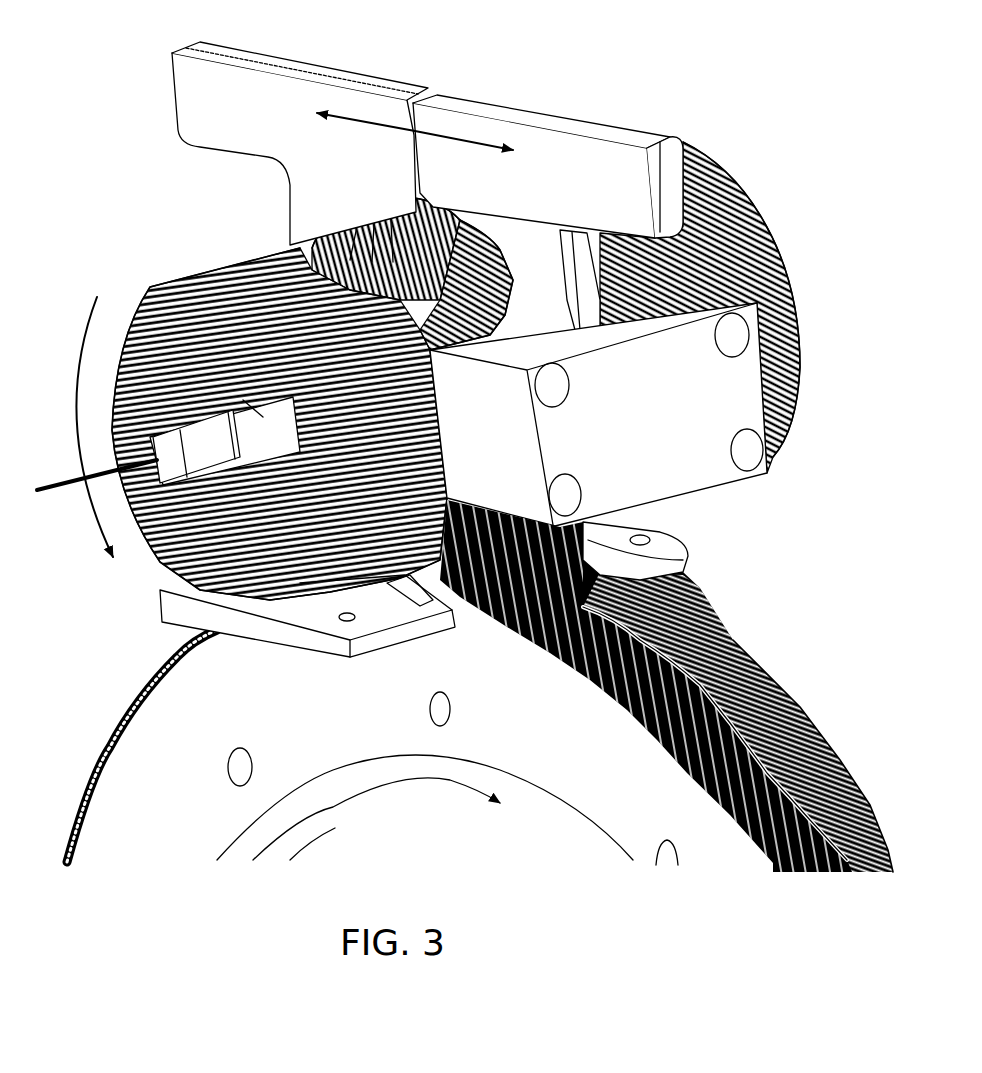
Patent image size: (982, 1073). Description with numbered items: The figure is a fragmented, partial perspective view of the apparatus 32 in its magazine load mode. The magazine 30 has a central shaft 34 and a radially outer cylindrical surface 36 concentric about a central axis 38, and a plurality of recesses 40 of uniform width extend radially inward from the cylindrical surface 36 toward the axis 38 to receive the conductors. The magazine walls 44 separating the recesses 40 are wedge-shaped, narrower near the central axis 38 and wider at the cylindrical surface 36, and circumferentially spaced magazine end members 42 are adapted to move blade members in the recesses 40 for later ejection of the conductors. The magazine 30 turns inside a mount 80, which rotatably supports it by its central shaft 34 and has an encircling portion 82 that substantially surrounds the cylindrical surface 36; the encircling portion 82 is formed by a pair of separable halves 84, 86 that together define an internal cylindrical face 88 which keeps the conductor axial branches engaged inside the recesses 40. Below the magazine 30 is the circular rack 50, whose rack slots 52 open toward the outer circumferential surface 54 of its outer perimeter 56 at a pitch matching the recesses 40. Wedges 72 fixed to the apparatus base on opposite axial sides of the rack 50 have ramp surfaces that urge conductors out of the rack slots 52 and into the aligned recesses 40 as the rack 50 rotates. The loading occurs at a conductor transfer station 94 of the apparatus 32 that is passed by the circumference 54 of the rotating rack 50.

The magazine 30 is at (330, 213).
The apparatus 32 is at (727, 50).
The central shaft 34 is at (143, 293).
The radially outer cylindrical surface 36 is at (443, 207).
The central axis 38 is at (63, 493).
The recesses 40 is at (527, 277).
The magazine end members 42 is at (763, 213).
The magazine walls 44 is at (380, 207).
The circular rack 50 is at (456, 686).
The rack slots 52 is at (77, 793).
The outer circumferential surface 54 is at (666, 686).
The outer perimeter 56 is at (770, 673).
The wedges 72 is at (307, 637).
The mount 80 is at (270, 217).
The encircling portion 82 is at (468, 97).
The separable half 84 is at (250, 80).
The separable half 86 is at (553, 153).
The internal cylindrical face 88 is at (490, 247).
The conductor transfer station 94 is at (767, 547).